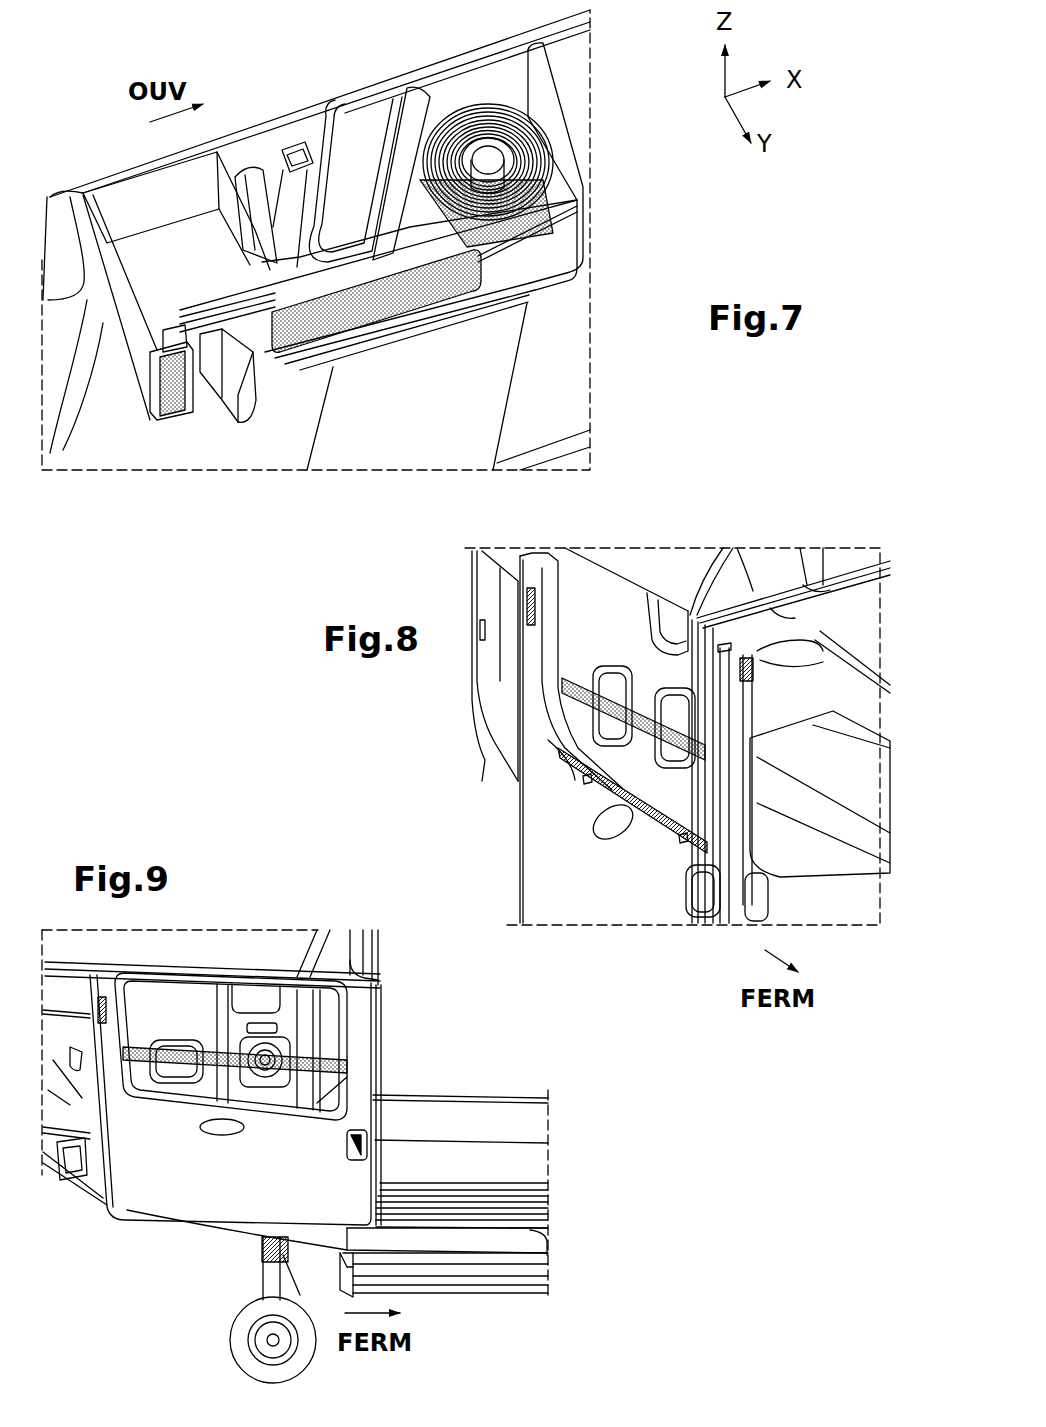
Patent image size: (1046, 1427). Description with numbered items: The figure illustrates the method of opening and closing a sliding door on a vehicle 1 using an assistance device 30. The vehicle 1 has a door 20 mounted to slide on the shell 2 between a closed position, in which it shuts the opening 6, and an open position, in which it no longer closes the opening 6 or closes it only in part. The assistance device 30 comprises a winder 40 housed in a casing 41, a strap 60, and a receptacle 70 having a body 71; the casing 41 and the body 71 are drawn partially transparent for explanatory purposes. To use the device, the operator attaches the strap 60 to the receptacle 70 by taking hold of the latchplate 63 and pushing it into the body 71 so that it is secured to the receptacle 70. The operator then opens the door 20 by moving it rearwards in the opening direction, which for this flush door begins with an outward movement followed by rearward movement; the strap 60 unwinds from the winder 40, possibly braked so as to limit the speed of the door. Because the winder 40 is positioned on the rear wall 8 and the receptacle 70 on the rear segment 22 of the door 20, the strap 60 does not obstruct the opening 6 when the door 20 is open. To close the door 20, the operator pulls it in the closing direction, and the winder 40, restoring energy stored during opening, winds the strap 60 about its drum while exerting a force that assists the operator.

In FIG. 8, the vehicle 1 is at (848, 622).
In FIG. 9, the vehicle 1 is at (472, 1315).
In FIG. 7, the shell 2 is at (320, 101).
In FIG. 8, the opening 6 is at (845, 930).
In FIG. 9, the opening 6 is at (570, 1262).
In FIG. 7, the rear wall 8 is at (407, 67).
In FIG. 8, the rear wall 8 is at (700, 868).
In FIG. 9, the rear wall 8 is at (343, 960).
In FIG. 7, the door 20 is at (318, 152).
In FIG. 8, the door 20 is at (538, 674).
In FIG. 9, the door 20 is at (85, 1115).
In FIG. 7, the rear segment 22 is at (300, 105).
In FIG. 8, the rear segment 22 is at (530, 740).
In FIG. 9, the rear segment 22 is at (130, 1190).
In FIG. 7, the assistance device 30 is at (520, 381).
In FIG. 7, the winder 40 is at (620, 243).
In FIG. 8, the winder 40 is at (770, 752).
In FIG. 9, the winder 40 is at (382, 1073).
In FIG. 7, the casing 41 is at (578, 123).
In FIG. 7, the strap 60 is at (380, 290).
In FIG. 8, the strap 60 is at (597, 713).
In FIG. 9, the strap 60 is at (157, 1072).
In FIG. 7, the latchplate 63 is at (203, 363).
In FIG. 7, the receptacle 70 is at (180, 430).
In FIG. 7, the body 71 is at (92, 232).